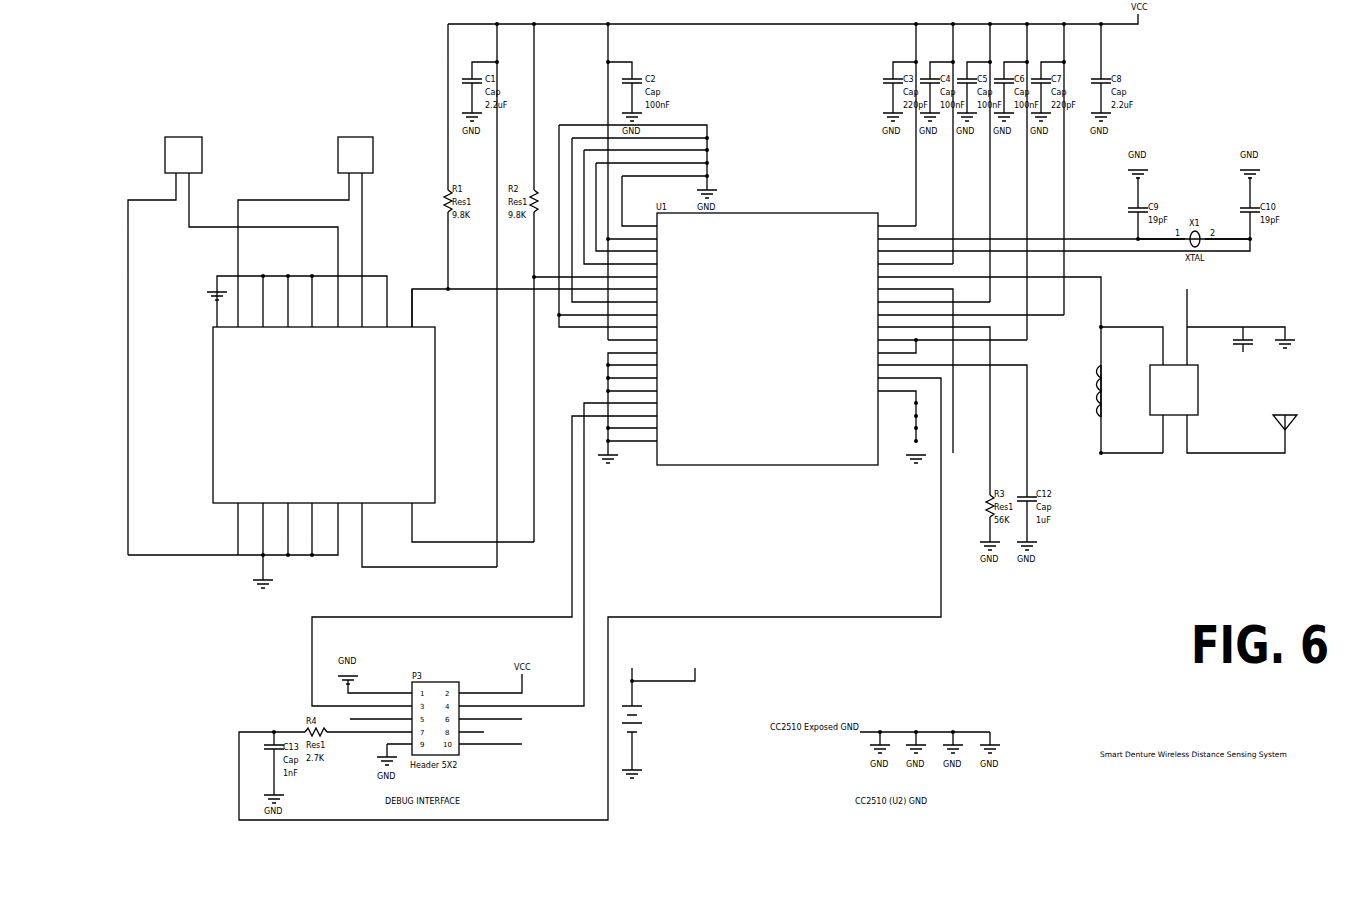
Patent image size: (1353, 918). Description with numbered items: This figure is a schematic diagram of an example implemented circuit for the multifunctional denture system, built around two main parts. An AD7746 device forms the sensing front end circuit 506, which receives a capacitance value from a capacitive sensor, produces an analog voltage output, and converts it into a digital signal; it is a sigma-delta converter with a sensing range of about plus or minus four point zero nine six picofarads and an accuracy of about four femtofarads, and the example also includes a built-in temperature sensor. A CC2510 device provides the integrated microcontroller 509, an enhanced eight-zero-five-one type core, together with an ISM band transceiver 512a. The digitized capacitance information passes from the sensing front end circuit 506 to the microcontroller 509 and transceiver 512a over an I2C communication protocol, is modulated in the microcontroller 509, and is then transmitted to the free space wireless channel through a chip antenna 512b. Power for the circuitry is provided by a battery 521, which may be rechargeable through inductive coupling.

The sensing front end circuit 506 is at (205, 416).
The microcontroller 509 is at (775, 507).
The transceiver 512a is at (745, 472).
The antenna 512b is at (1240, 496).
The battery 521 is at (720, 730).